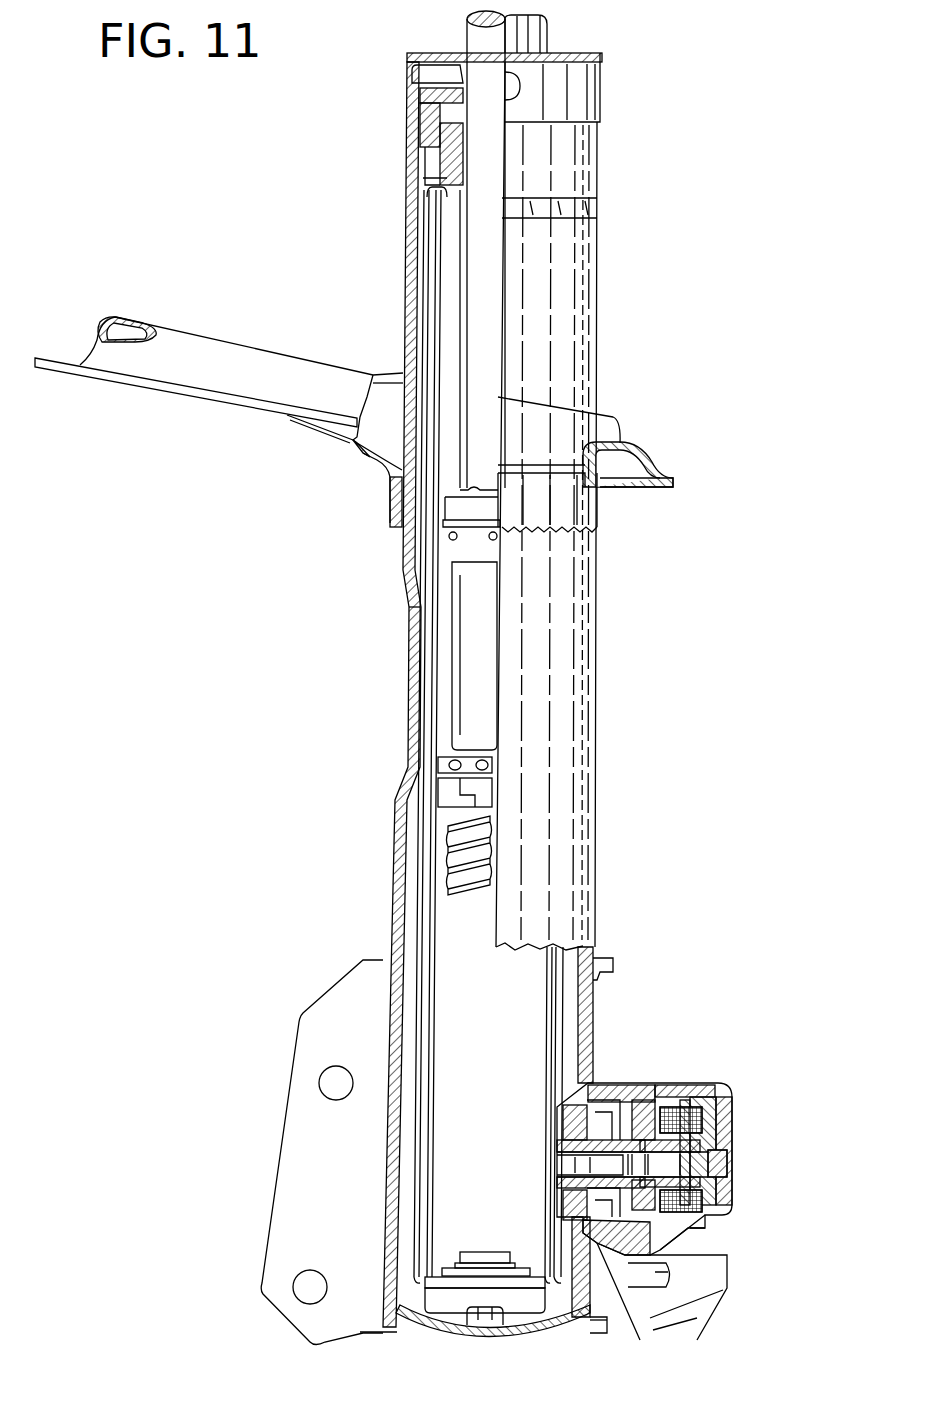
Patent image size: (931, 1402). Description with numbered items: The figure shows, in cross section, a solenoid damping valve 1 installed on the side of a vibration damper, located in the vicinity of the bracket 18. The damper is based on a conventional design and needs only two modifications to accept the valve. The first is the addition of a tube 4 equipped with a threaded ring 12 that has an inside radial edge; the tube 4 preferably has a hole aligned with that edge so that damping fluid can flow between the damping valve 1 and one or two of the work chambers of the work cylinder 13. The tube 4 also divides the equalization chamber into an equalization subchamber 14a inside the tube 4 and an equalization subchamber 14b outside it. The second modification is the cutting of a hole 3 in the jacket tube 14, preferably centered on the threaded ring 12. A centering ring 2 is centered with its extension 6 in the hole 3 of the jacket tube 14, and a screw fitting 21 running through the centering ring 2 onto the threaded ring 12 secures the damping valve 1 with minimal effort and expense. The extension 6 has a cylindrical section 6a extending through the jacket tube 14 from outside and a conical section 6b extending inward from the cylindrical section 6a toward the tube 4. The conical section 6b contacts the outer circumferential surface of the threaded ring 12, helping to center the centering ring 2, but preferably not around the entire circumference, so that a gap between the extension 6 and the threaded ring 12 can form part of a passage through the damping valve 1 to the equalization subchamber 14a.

The damping valve 1 is at (630, 1168).
The centering ring 2 is at (722, 1250).
The hole 3 is at (592, 1065).
The tube 4 is at (567, 1008).
The extension 6 is at (571, 1201).
The cylindrical section 6a is at (580, 1153).
The conical section 6b is at (572, 1118).
The threaded ring 12 is at (562, 1137).
The work cylinder 13 is at (430, 626).
The jacket tube 14 is at (415, 822).
The equalization subchamber 14a is at (420, 870).
The equalization subchamber 14b is at (415, 922).
The bracket 18 is at (297, 1148).
The screw fitting 21 is at (597, 1240).